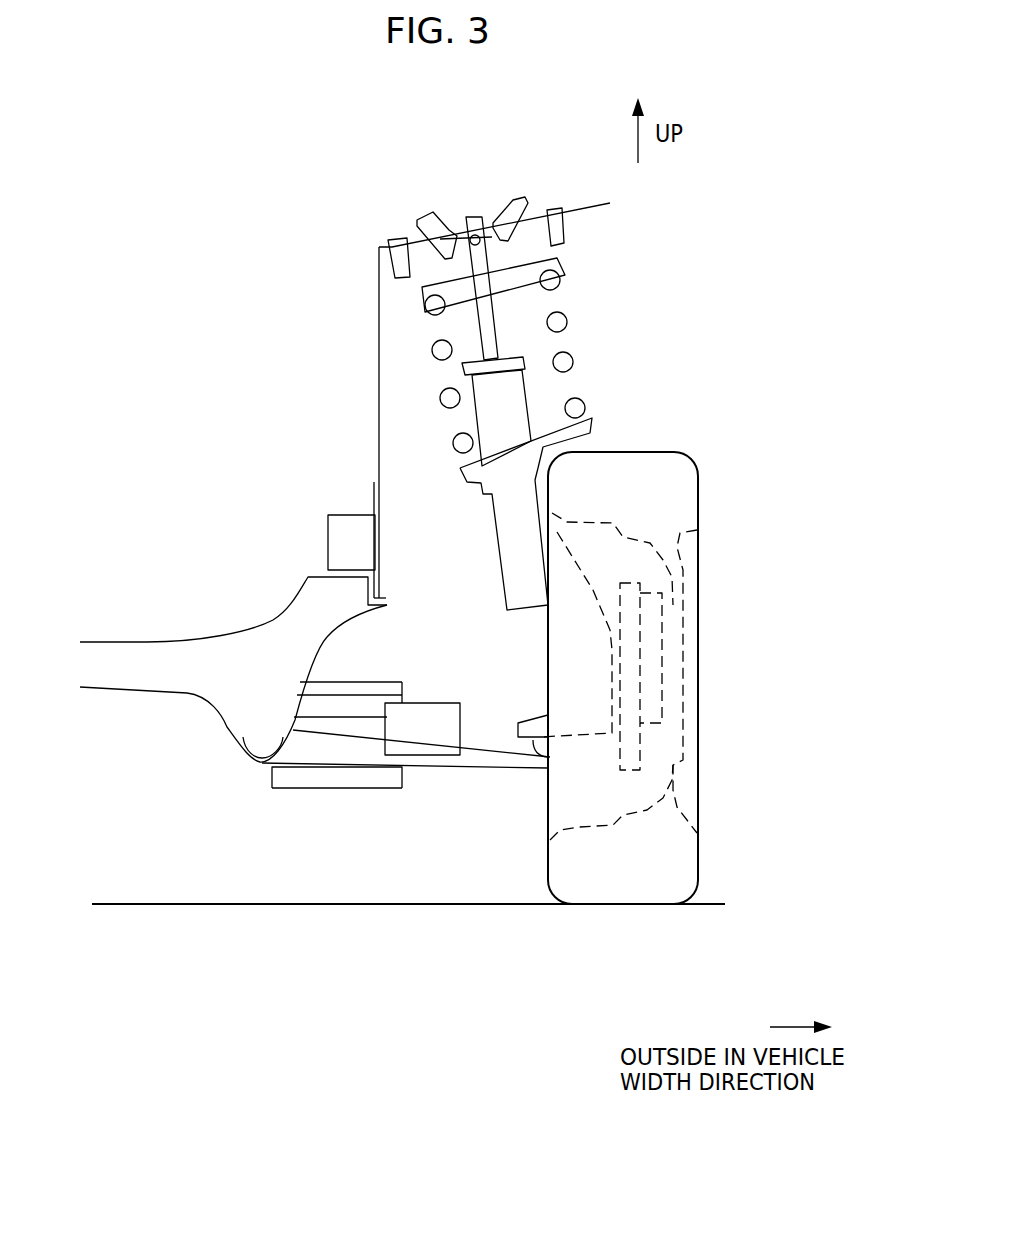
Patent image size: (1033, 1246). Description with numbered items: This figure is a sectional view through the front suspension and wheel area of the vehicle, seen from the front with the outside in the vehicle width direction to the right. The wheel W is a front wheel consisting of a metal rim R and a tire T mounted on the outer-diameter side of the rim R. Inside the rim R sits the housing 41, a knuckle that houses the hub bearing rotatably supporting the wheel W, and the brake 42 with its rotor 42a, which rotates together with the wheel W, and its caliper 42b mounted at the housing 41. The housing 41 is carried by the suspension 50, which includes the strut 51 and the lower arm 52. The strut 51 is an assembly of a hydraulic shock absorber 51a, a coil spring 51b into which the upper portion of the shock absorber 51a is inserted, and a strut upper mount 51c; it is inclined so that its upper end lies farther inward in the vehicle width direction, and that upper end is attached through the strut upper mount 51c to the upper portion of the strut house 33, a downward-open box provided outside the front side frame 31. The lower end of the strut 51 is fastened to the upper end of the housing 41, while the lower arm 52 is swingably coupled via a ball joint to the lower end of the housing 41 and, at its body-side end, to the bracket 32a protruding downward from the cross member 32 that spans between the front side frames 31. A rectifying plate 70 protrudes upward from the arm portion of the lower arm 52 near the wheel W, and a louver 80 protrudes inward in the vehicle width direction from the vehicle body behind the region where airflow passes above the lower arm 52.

The front side frame 31 is at (328, 532).
The cross member 32 is at (142, 642).
The bracket 32a is at (250, 738).
The strut house 33 is at (378, 297).
The housing 41 is at (607, 655).
The brake 42 is at (718, 727).
The rotor 42a is at (645, 745).
The caliper 42b is at (663, 700).
The suspension 50 is at (657, 286).
The strut 51 is at (590, 361).
The shock absorber 51a is at (528, 411).
The coil spring 51b is at (590, 361).
The strut upper mount 51c is at (455, 237).
The lower arm 52 is at (320, 765).
The rectifying plate 70 is at (460, 738).
The louver 80 is at (345, 790).
The wheel W is at (678, 648).
The tire T is at (700, 487).
The rim R is at (700, 533).